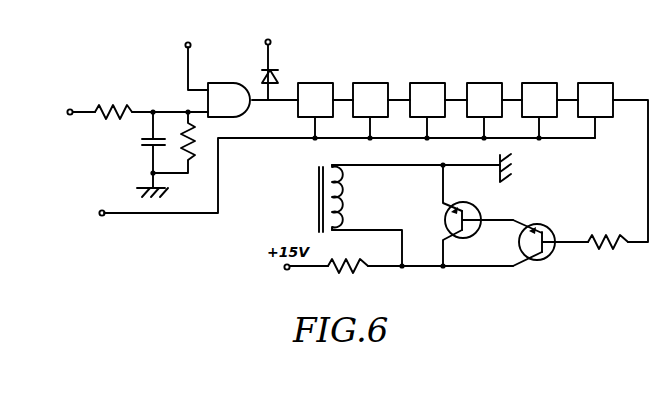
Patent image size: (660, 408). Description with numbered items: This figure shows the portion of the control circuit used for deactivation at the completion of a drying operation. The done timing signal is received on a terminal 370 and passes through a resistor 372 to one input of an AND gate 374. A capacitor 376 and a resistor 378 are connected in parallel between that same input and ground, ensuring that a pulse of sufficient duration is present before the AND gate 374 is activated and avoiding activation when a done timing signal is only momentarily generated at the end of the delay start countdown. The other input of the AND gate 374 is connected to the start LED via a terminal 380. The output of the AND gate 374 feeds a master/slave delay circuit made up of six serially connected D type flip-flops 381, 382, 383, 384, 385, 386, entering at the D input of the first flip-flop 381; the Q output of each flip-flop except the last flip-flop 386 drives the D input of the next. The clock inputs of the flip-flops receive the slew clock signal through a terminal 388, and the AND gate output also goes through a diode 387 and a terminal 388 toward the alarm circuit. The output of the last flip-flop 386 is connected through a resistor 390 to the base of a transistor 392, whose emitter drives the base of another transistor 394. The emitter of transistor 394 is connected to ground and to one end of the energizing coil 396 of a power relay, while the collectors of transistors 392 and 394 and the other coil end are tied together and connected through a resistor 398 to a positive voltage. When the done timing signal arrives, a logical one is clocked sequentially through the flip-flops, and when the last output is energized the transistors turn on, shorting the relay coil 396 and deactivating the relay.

The terminal 370 is at (69, 110).
The resistor 372 is at (128, 106).
The AND gate 374 is at (245, 83).
The capacitor 376 is at (150, 148).
The resistor 378 is at (196, 142).
The terminal 380 is at (190, 42).
The D type flip-flop 381 is at (318, 69).
The D type flip-flop 382 is at (375, 69).
The D type flip-flop 383 is at (432, 69).
The D type flip-flop 384 is at (489, 69).
The D type flip-flop 385 is at (544, 69).
The D type flip-flop 386 is at (600, 69).
The diode 387 is at (263, 102).
The terminal 388 is at (271, 41).
The resistor 390 is at (620, 238).
The transistor 392 is at (562, 211).
The transistor 394 is at (445, 214).
The energizing coil 396 is at (334, 162).
The resistor 398 is at (348, 273).